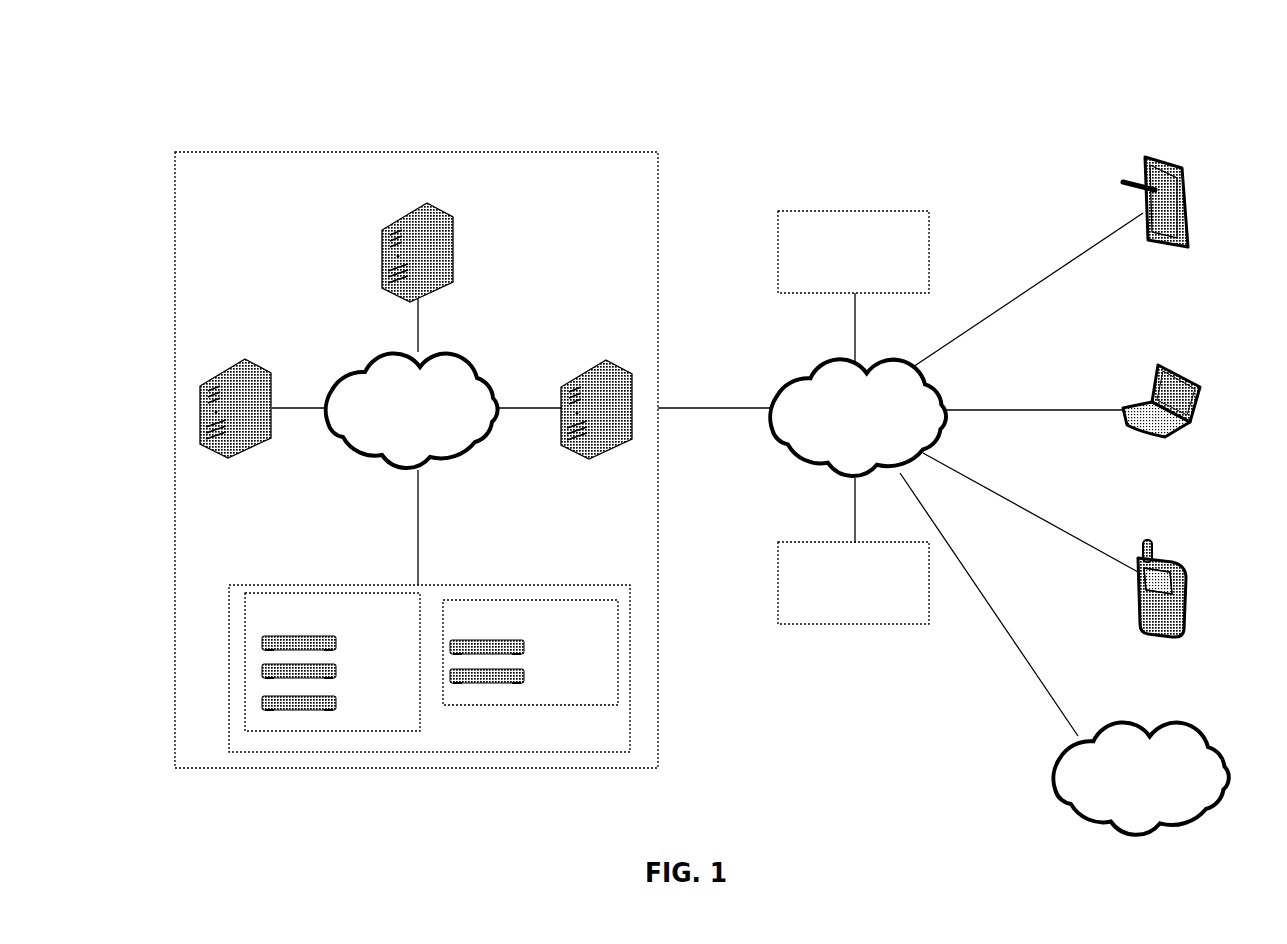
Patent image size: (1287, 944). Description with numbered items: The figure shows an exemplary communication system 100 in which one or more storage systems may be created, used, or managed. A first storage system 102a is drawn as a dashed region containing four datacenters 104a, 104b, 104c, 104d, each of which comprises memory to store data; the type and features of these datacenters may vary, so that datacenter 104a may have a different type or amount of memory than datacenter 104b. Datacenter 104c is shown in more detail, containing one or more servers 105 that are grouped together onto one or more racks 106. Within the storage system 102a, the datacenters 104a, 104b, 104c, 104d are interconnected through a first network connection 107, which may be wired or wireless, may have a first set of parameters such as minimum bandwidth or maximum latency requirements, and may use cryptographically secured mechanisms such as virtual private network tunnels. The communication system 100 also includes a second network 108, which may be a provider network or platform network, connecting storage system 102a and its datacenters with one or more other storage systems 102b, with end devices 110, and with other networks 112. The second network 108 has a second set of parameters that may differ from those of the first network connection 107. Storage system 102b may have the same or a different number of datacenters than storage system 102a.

The communication system 100 is at (172, 56).
The storage system 102a is at (250, 193).
The storage system 102b is at (828, 262).
The datacenter 104a is at (417, 238).
The datacenter 104b is at (596, 425).
The datacenter 104c is at (264, 585).
The datacenter 104d is at (235, 425).
The server 105 is at (336, 645).
The rack 106 is at (307, 626).
The first network connection 107 is at (430, 422).
The second network 108 is at (876, 429).
The end device 110 is at (1161, 412).
The other network 112 is at (1159, 790).